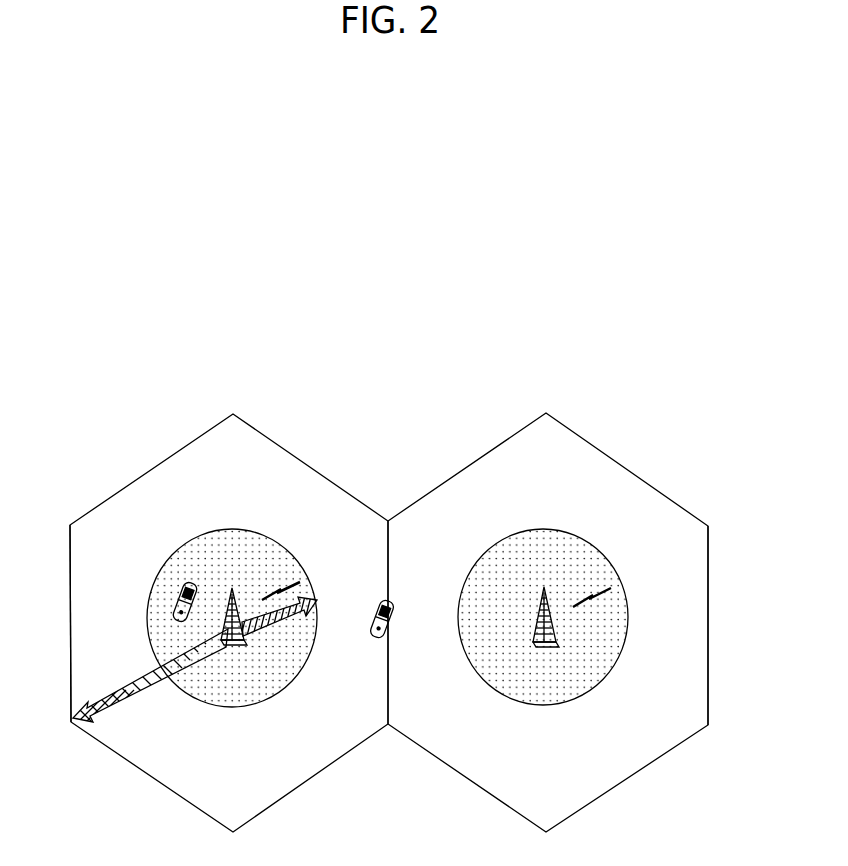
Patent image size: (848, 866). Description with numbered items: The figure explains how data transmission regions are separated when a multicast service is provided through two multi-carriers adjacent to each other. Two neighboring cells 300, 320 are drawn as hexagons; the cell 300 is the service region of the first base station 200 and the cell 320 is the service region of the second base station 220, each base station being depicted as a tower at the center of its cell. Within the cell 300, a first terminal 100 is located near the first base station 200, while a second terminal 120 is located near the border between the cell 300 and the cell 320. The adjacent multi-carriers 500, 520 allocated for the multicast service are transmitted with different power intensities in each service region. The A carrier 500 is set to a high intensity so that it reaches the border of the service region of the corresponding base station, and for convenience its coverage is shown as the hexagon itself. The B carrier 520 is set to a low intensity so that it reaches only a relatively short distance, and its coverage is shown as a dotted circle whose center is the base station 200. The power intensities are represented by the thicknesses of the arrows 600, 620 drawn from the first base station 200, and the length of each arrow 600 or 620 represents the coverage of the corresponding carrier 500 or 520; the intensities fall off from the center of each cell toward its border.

The first terminal 100 is at (175, 599).
The second terminal 120 is at (378, 600).
The first base station 200 is at (237, 608).
The second base station 220 is at (560, 625).
The cell 300 is at (150, 471).
The cell 320 is at (462, 471).
The A carrier 500 is at (78, 569).
The B carrier 520 is at (218, 537).
The arrow 600 is at (140, 690).
The arrow 620 is at (291, 612).